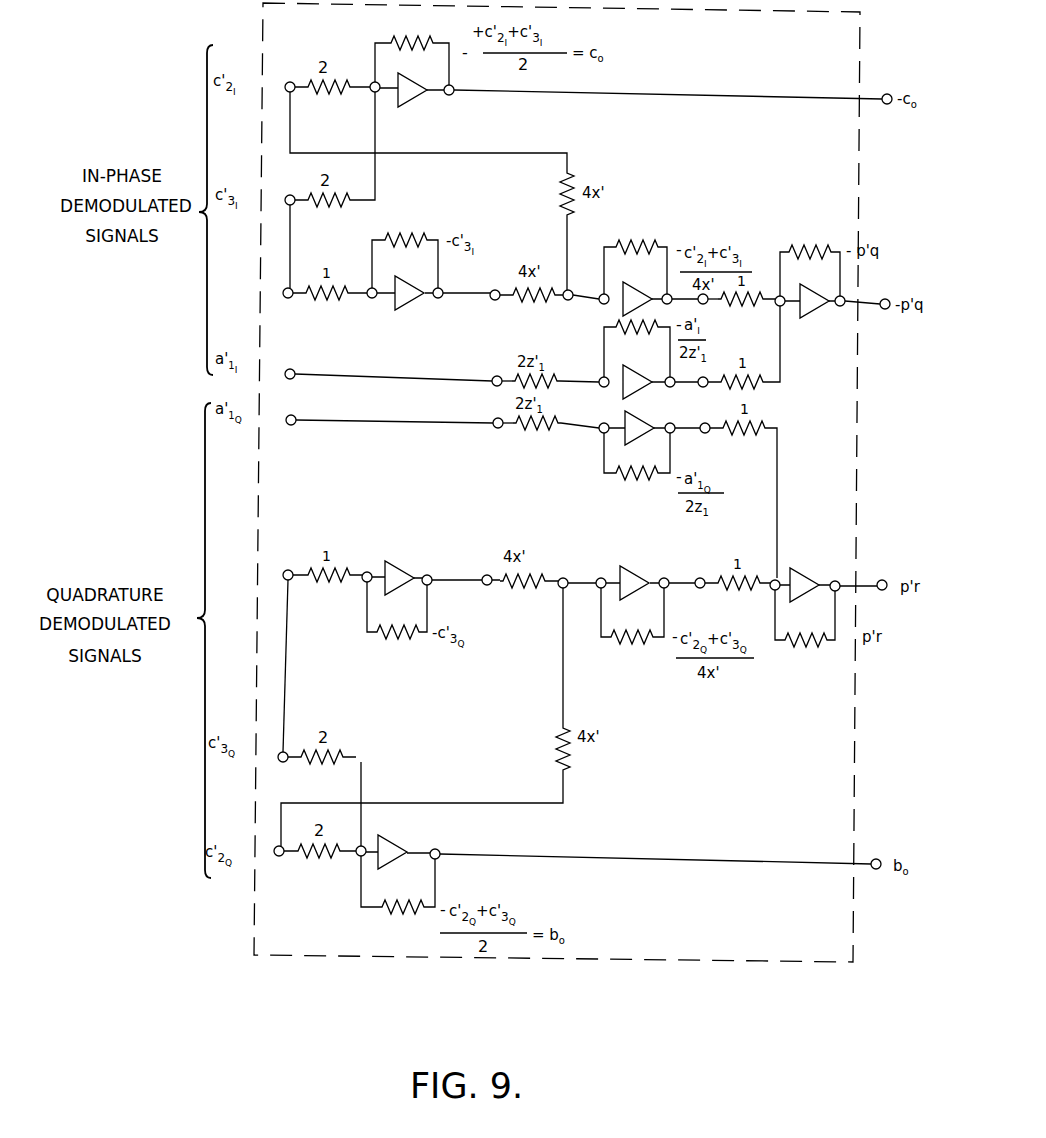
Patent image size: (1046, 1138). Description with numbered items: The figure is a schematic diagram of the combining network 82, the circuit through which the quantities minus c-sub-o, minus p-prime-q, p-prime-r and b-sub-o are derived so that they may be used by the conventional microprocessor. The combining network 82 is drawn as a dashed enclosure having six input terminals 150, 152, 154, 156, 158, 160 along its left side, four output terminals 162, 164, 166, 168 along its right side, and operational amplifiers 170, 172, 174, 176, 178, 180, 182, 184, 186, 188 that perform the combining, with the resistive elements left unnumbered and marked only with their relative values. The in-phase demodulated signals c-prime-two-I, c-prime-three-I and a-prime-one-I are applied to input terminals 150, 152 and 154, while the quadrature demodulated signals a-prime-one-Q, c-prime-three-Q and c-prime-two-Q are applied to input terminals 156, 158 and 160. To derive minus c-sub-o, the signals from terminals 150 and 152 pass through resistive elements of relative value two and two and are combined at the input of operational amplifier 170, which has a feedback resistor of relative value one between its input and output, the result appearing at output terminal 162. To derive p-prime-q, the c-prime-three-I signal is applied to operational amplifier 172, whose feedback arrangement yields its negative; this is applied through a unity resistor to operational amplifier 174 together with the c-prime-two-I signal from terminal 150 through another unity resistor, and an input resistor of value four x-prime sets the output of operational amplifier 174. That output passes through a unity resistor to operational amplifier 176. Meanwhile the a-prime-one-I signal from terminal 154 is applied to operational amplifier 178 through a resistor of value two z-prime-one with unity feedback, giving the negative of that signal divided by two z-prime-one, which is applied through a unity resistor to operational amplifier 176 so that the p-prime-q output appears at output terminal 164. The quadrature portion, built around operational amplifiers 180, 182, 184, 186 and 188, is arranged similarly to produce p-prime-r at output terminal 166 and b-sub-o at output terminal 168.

The combining network 82 is at (601, 962).
The input terminal 150 is at (290, 82).
The input terminal 152 is at (290, 195).
The input terminal 154 is at (293, 370).
The input terminal 156 is at (294, 417).
The input terminal 158 is at (280, 752).
The input terminal 160 is at (280, 857).
The output terminal 162 is at (884, 94).
The output terminal 164 is at (882, 299).
The output terminal 166 is at (880, 580).
The output terminal 168 is at (877, 858).
The operational amplifier 170 is at (414, 101).
The operational amplifier 172 is at (408, 305).
The operational amplifier 174 is at (650, 285).
The operational amplifier 176 is at (822, 318).
The operational amplifier 178 is at (640, 393).
The operational amplifier 180 is at (627, 420).
The operational amplifier 182 is at (394, 571).
The operational amplifier 184 is at (629, 573).
The operational amplifier 186 is at (803, 573).
The operational amplifier 188 is at (392, 850).